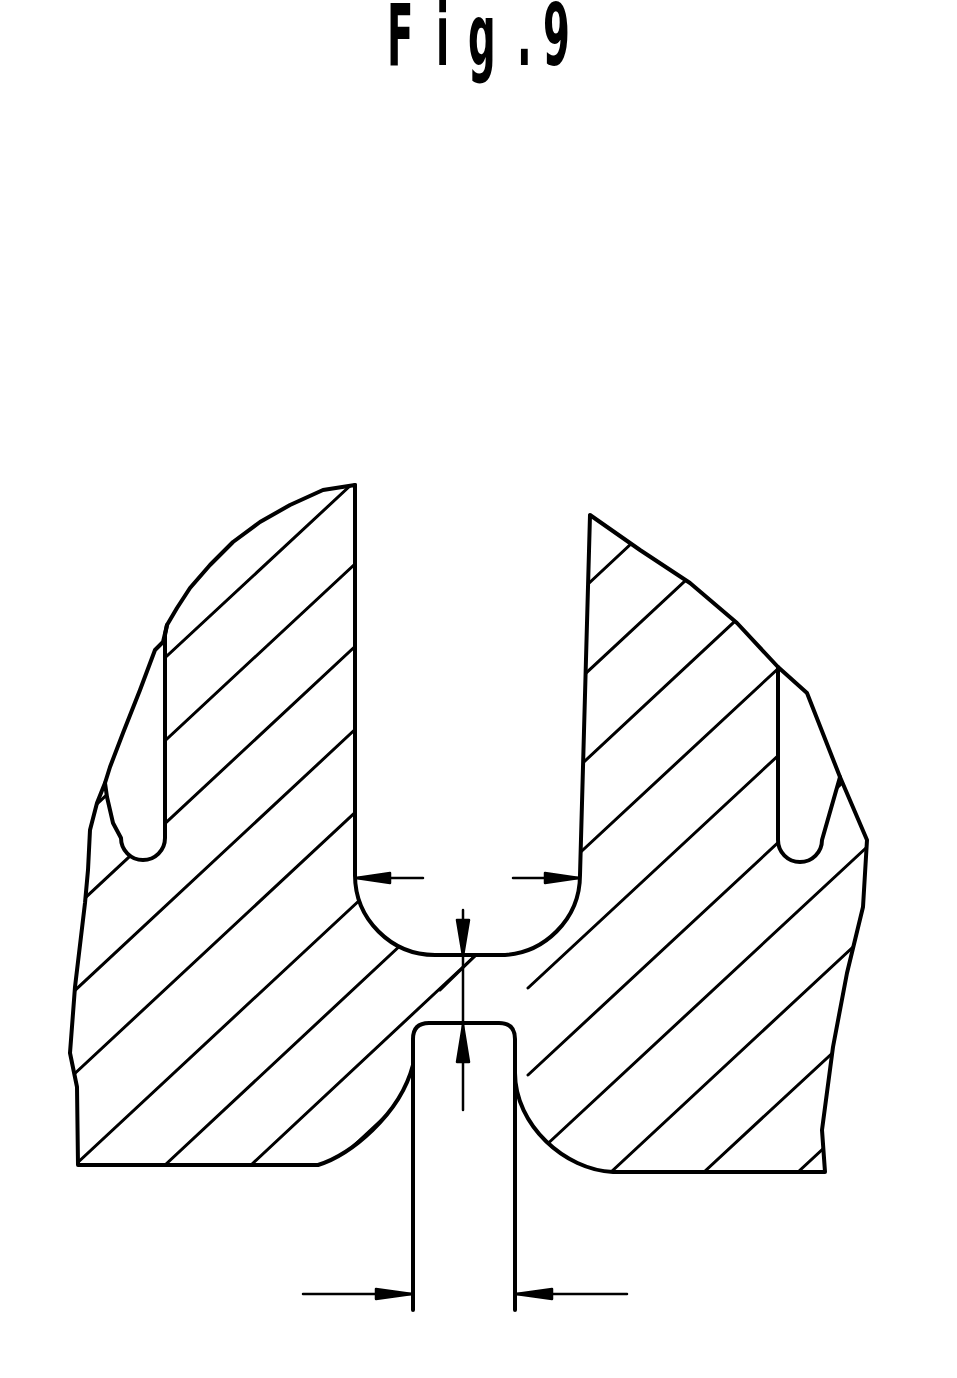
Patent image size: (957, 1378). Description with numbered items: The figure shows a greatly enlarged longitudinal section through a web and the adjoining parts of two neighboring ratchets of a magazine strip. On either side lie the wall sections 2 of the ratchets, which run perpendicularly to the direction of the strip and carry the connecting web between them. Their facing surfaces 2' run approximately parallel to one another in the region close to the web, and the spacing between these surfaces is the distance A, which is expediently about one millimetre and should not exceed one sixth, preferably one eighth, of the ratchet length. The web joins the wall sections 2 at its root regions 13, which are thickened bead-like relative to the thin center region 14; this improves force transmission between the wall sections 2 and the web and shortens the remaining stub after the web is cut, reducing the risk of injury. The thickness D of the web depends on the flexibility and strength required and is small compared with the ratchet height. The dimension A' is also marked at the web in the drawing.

The wall section 2 is at (468, 823).
The surface of wall section 2' is at (421, 680).
The root region 13 is at (538, 1022).
The center region 14 is at (490, 983).
The distance between surfaces A is at (467, 866).
The thickness of web D is at (464, 1042).
The pin width A' is at (465, 1299).